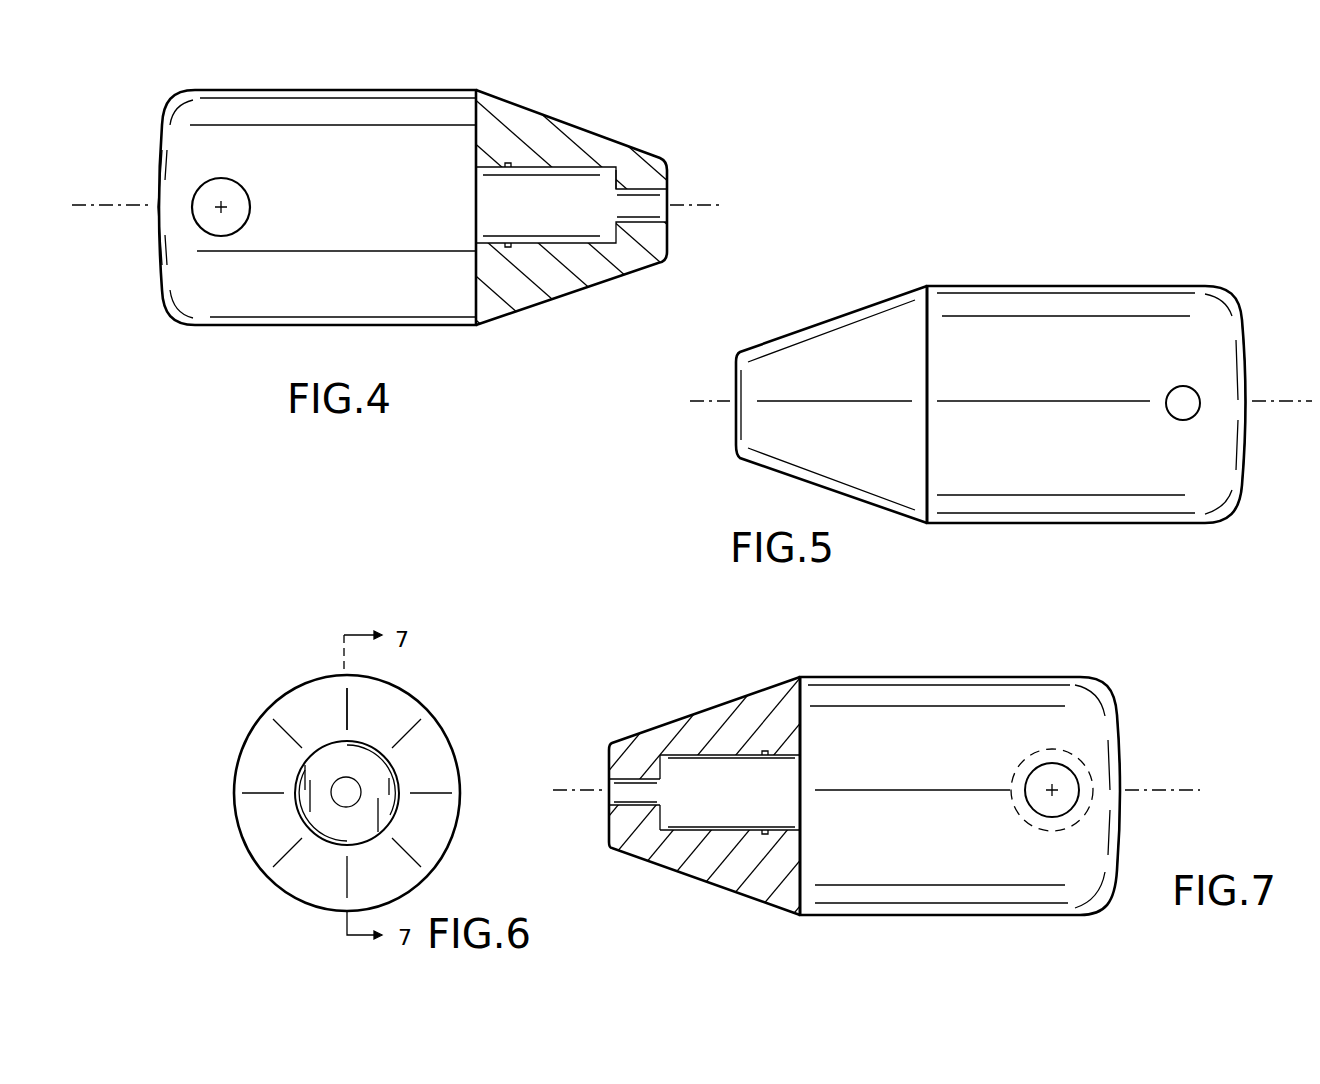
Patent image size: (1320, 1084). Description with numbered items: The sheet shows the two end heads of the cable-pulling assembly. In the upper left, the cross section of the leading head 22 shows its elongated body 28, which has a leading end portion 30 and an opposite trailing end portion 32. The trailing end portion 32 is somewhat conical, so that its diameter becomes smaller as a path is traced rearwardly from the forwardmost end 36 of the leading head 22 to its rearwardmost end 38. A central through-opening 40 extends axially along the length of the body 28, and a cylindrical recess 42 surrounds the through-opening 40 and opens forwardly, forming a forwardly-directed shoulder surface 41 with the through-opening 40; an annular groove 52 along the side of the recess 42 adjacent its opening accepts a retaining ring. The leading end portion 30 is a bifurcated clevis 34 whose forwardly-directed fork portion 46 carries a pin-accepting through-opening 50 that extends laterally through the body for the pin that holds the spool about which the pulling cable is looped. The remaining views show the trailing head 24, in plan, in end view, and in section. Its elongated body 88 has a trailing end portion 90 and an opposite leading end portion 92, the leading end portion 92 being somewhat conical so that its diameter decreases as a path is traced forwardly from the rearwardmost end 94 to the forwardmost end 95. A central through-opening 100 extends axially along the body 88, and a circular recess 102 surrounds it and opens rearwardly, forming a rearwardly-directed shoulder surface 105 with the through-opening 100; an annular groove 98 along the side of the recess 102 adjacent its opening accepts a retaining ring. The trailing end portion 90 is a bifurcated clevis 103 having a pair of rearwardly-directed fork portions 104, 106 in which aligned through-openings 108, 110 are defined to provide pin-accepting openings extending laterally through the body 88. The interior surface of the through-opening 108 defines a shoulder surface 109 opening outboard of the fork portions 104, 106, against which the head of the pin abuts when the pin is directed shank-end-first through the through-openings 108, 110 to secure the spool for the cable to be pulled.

In FIG. 4, the leading head 22 is at (358, 90).
In FIG. 5, the trailing head 24 is at (1100, 286).
In FIG. 6, the trailing head 24 is at (280, 884).
In FIG. 7, the trailing head 24 is at (905, 677).
In FIG. 4, the elongated body 28 is at (245, 325).
In FIG. 4, the leading end portion 30 is at (206, 90).
In FIG. 4, the trailing end portion 32 is at (592, 283).
In FIG. 4, the bifurcated clevis 34 is at (305, 325).
In FIG. 4, the forwardmost end 36 is at (158, 240).
In FIG. 4, the rearwardmost end 38 is at (668, 162).
In FIG. 4, the central through-opening 40 is at (656, 205).
In FIG. 4, the shoulder surface 41 is at (602, 170).
In FIG. 4, the cylindrical recess 42 is at (548, 166).
In FIG. 4, the fork portion 46 is at (292, 90).
In FIG. 4, the through-opening 50 is at (206, 196).
In FIG. 4, the annular groove 52 is at (530, 240).
In FIG. 5, the elongated body 88 is at (983, 286).
In FIG. 6, the elongated body 88 is at (248, 735).
In FIG. 7, the elongated body 88 is at (848, 677).
In FIG. 7, the trailing end portion 90 is at (1068, 915).
In FIG. 5, the leading end portion 92 is at (820, 324).
In FIG. 6, the leading end portion 92 is at (386, 707).
In FIG. 7, the leading end portion 92 is at (680, 718).
In FIG. 5, the rearwardmost end 94 is at (1243, 465).
In FIG. 7, the rearwardmost end 94 is at (1120, 790).
In FIG. 5, the forwardmost end 95 is at (735, 430).
In FIG. 7, the forwardmost end 95 is at (609, 824).
In FIG. 7, the annular groove 98 is at (776, 820).
In FIG. 6, the central through-opening 100 is at (333, 787).
In FIG. 7, the central through-opening 100 is at (634, 782).
In FIG. 7, the circular recess 102 is at (712, 814).
In FIG. 5, the bifurcated clevis 103 is at (1113, 523).
In FIG. 7, the bifurcated clevis 103 is at (970, 915).
In FIG. 5, the fork portion 104 is at (1190, 523).
In FIG. 7, the shoulder surface 105 is at (660, 807).
In FIG. 7, the fork portion 106 is at (978, 677).
In FIG. 7, the through-opening 108 is at (1066, 800).
In FIG. 7, the shoulder surface 109 is at (1062, 772).
In FIG. 5, the through-opening 110 is at (1168, 392).